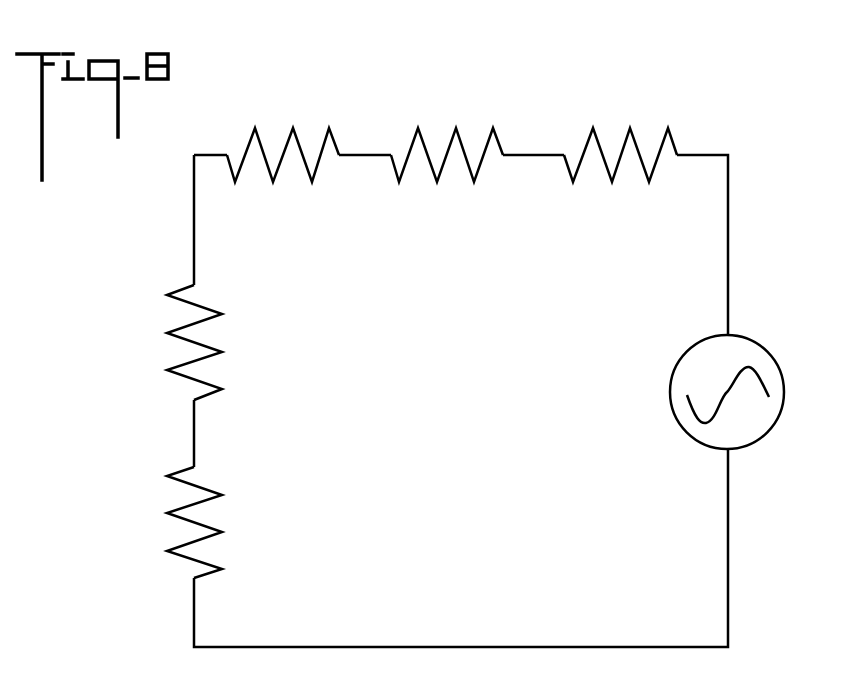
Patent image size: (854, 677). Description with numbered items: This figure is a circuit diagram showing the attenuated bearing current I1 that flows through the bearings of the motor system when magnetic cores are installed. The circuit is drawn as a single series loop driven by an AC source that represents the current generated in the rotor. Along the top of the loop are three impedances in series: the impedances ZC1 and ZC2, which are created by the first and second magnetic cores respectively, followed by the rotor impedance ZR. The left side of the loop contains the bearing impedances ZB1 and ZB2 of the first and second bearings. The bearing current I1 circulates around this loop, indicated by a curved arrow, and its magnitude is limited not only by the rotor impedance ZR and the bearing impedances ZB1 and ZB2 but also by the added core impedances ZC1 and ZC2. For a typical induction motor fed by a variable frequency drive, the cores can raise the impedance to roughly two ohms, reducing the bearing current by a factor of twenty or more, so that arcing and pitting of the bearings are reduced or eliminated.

The impedance of first magnetic core ZC1 is at (283, 126).
The impedance of second magnetic core ZC2 is at (447, 126).
The rotor impedance ZR is at (620, 126).
The first bearing impedance ZB1 is at (157, 342).
The second bearing impedance ZB2 is at (157, 522).
The attenuated bearing current I1 is at (246, 322).